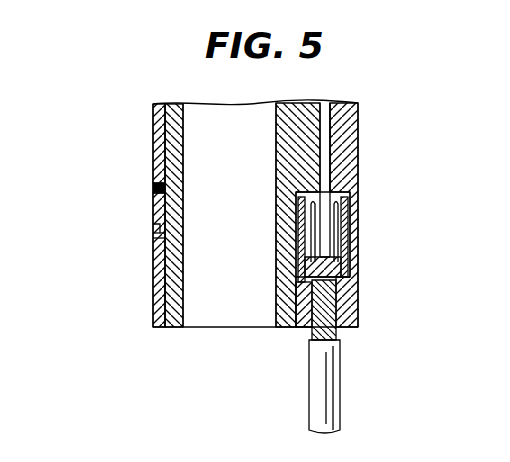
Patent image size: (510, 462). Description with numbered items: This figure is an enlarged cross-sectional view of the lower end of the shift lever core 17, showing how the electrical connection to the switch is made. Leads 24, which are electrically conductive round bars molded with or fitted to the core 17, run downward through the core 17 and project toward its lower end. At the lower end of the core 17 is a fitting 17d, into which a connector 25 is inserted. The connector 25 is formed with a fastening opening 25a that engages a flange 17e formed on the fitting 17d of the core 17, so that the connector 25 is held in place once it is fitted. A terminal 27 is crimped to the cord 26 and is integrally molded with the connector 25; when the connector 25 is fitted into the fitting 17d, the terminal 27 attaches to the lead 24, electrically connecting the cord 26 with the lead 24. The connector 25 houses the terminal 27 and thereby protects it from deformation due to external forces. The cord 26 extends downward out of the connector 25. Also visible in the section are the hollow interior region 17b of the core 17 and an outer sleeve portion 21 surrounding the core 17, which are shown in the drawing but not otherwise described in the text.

The core 17 is at (165, 166).
The cavity 17b is at (200, 297).
The fitting 17d is at (305, 327).
The flange 17e is at (157, 232).
The outer sleeve 21 is at (155, 108).
The leads 24 is at (328, 150).
The connector 25 is at (157, 318).
The fastening opening 25a is at (157, 238).
The cord 26 is at (340, 385).
The terminal 27 is at (338, 244).